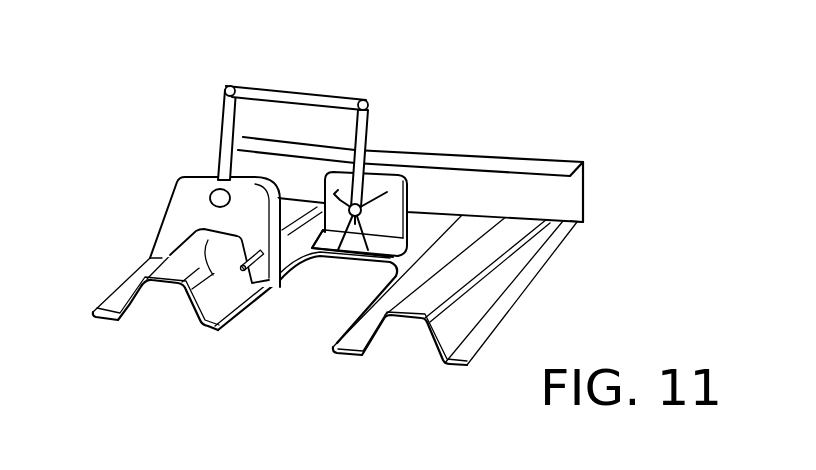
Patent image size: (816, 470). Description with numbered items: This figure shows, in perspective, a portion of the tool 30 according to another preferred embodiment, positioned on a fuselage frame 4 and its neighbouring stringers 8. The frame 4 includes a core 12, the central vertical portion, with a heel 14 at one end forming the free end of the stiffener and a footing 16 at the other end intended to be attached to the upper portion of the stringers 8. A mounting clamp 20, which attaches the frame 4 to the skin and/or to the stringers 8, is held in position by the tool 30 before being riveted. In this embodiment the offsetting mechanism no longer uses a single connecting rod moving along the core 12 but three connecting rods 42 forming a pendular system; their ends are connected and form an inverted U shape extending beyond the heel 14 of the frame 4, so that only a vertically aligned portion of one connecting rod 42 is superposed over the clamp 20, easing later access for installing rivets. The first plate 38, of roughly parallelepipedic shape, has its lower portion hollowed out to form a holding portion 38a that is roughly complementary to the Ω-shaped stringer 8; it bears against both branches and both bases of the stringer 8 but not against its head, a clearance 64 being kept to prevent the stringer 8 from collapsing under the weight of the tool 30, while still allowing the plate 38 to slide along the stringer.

The frame 4 is at (474, 180).
The stringer 8 is at (174, 272).
The core 12 is at (590, 216).
The heel 14 is at (567, 167).
The footing 16 is at (568, 197).
The mounting clamp 20 is at (400, 198).
The tool 30 is at (150, 208).
The first plate 38 is at (192, 203).
The holding portion 38a is at (196, 230).
The connecting rod 42 is at (228, 118).
The clearance 64 is at (245, 300).